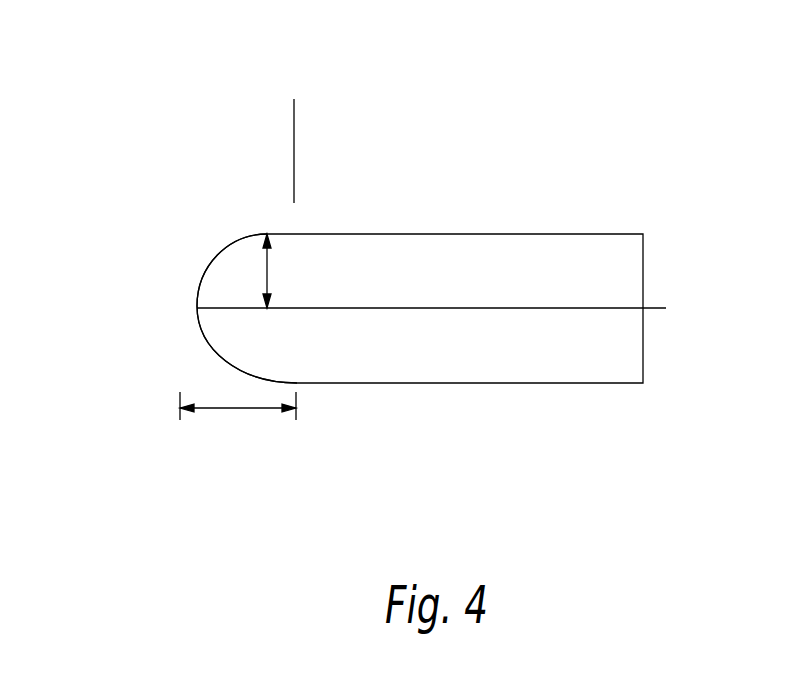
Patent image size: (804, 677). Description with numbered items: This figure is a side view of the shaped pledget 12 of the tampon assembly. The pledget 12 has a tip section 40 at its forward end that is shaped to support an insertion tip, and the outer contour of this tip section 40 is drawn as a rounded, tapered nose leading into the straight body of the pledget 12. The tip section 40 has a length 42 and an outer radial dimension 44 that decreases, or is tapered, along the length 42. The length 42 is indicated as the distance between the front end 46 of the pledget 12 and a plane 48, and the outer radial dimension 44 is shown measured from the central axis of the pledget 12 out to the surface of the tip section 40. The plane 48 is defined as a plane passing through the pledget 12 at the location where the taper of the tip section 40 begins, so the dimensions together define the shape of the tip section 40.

The shaped pledget 12 is at (518, 140).
The tip section 40 is at (215, 260).
The length 42 is at (240, 408).
The outer radial dimension 44 is at (268, 272).
The front end 46 is at (200, 308).
The plane 48 is at (294, 130).